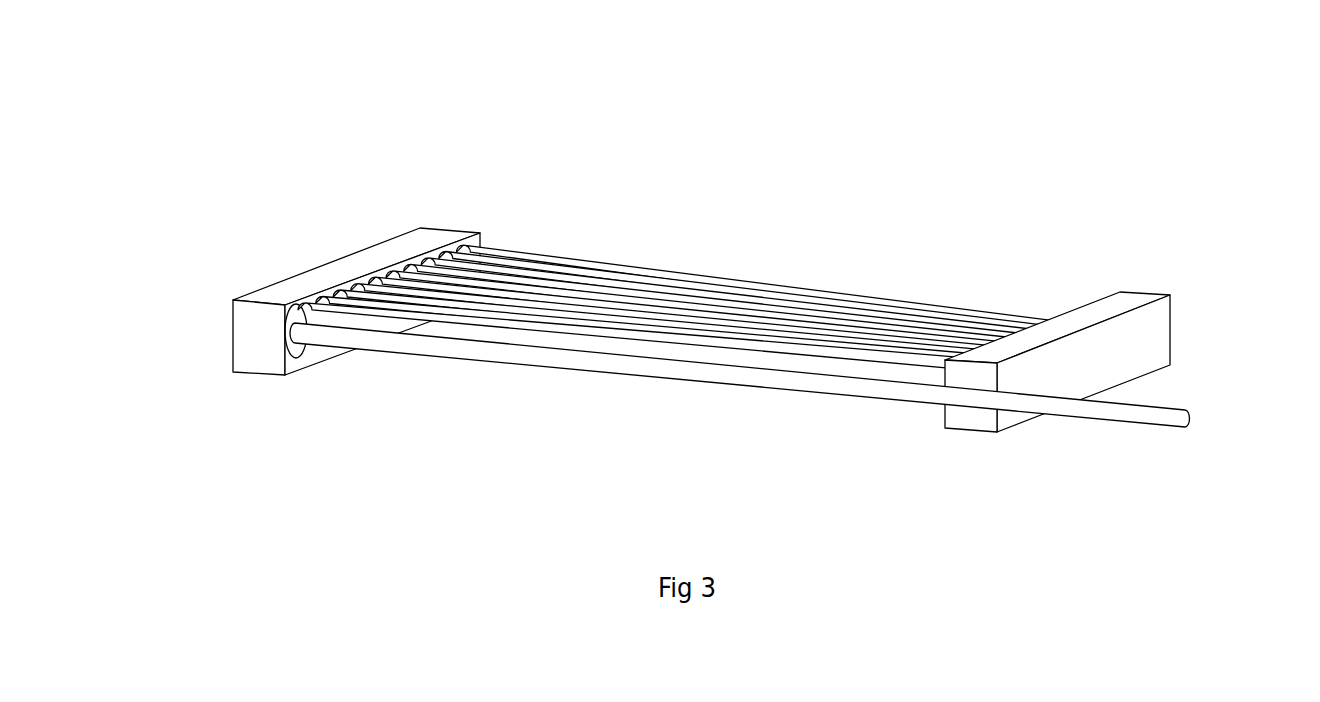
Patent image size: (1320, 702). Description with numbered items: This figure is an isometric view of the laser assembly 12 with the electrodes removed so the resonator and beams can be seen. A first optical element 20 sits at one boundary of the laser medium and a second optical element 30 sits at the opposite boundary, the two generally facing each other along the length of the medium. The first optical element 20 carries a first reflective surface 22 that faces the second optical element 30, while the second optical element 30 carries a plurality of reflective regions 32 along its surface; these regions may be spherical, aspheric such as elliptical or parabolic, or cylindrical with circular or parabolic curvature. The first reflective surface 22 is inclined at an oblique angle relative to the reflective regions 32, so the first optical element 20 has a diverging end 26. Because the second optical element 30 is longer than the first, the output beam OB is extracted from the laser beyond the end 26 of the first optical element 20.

The optical assembly 12 is at (692, 279).
The first optical element 20 is at (1095, 358).
The first reflective surface 22 is at (1060, 312).
The diverging end 26 is at (970, 417).
The second optical element 30 is at (245, 357).
The reflective regions 32 is at (457, 129).
The output beam OB is at (1148, 413).